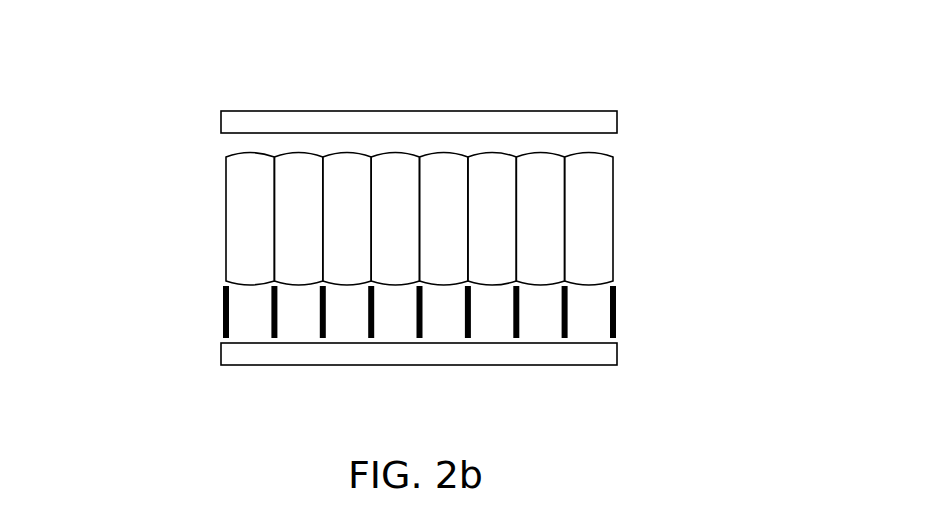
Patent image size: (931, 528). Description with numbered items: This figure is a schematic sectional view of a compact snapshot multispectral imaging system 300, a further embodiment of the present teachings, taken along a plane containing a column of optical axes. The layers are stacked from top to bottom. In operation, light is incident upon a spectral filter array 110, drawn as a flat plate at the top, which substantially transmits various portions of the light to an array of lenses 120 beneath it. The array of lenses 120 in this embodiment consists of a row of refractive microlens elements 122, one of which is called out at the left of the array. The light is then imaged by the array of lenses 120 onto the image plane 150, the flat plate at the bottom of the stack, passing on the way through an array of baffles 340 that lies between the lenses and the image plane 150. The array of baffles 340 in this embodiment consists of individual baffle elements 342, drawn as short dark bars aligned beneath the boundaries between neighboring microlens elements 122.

The compact snapshot multispectral imaging system 300 is at (142, 94).
The spectral filter array 110 is at (418, 111).
The array of lenses 120 is at (438, 218).
The refractive microlens element 122 is at (250, 220).
The array of baffles 340 is at (437, 314).
The baffle element 342 is at (616, 311).
The image plane 150 is at (418, 366).